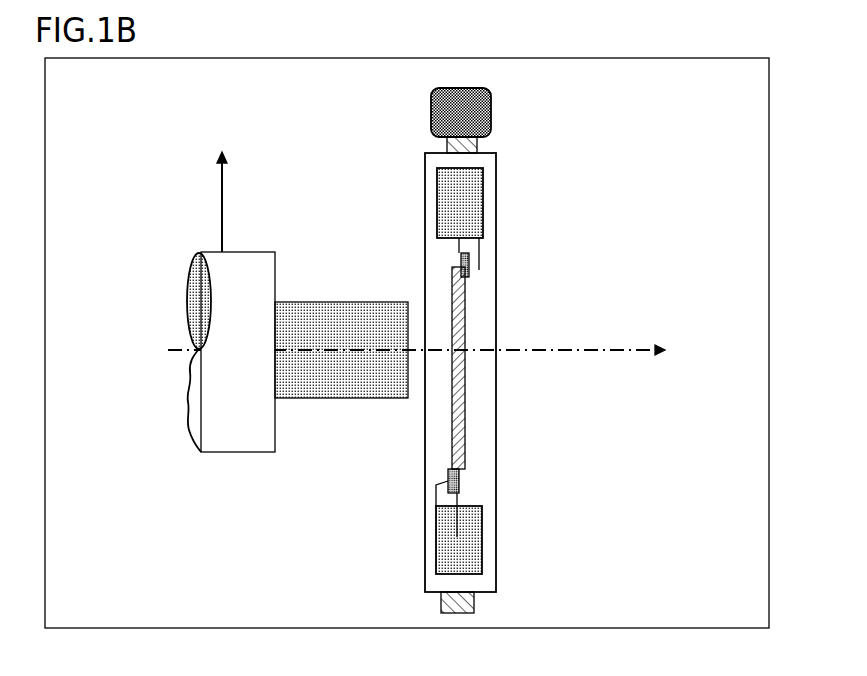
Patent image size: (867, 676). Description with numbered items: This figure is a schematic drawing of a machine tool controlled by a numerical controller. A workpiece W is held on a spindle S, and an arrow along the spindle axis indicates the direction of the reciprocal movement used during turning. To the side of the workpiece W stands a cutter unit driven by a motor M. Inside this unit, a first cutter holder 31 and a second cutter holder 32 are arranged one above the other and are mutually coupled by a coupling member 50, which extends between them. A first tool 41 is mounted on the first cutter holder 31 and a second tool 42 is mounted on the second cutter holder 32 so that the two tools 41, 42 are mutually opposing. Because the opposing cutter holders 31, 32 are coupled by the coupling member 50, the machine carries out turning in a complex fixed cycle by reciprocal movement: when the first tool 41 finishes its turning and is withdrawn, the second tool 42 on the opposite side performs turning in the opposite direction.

The first cutter holder 31 is at (437, 190).
The second cutter holder 32 is at (433, 545).
The first tool 41 is at (468, 269).
The second tool 42 is at (466, 498).
The coupling member 50 is at (468, 425).
The motor M is at (481, 120).
The spindle S is at (248, 258).
The workpiece W is at (323, 313).